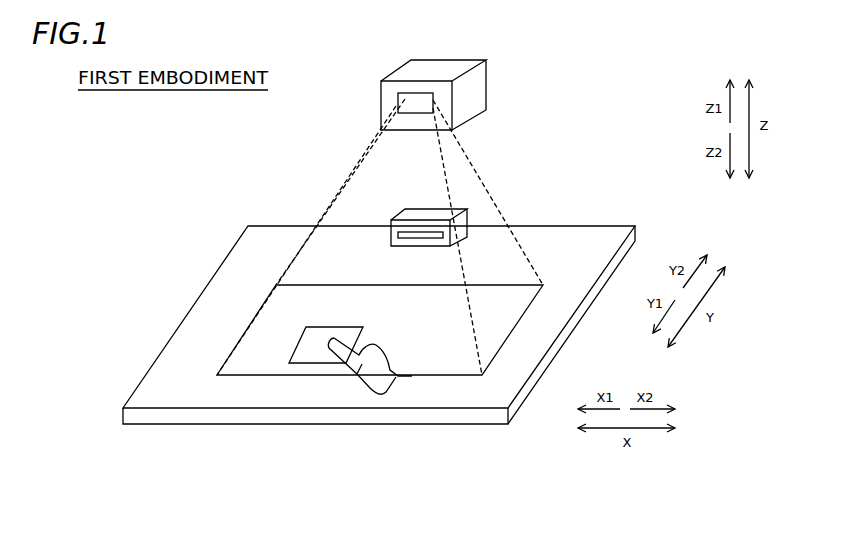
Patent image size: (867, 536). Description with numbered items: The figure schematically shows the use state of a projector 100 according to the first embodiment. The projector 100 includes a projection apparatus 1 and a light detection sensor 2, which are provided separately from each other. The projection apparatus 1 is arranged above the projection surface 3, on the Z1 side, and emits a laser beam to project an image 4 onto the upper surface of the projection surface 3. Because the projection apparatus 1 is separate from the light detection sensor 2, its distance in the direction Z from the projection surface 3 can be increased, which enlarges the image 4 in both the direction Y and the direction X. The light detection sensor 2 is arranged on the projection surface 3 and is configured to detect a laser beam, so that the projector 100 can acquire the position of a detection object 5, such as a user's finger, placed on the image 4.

The projection apparatus 1 is at (462, 60).
The light detection sensor 2 is at (420, 212).
The projection surface 3 is at (246, 258).
The image 4 is at (253, 352).
The detection object 5 is at (333, 345).
The projector 100 is at (537, 92).